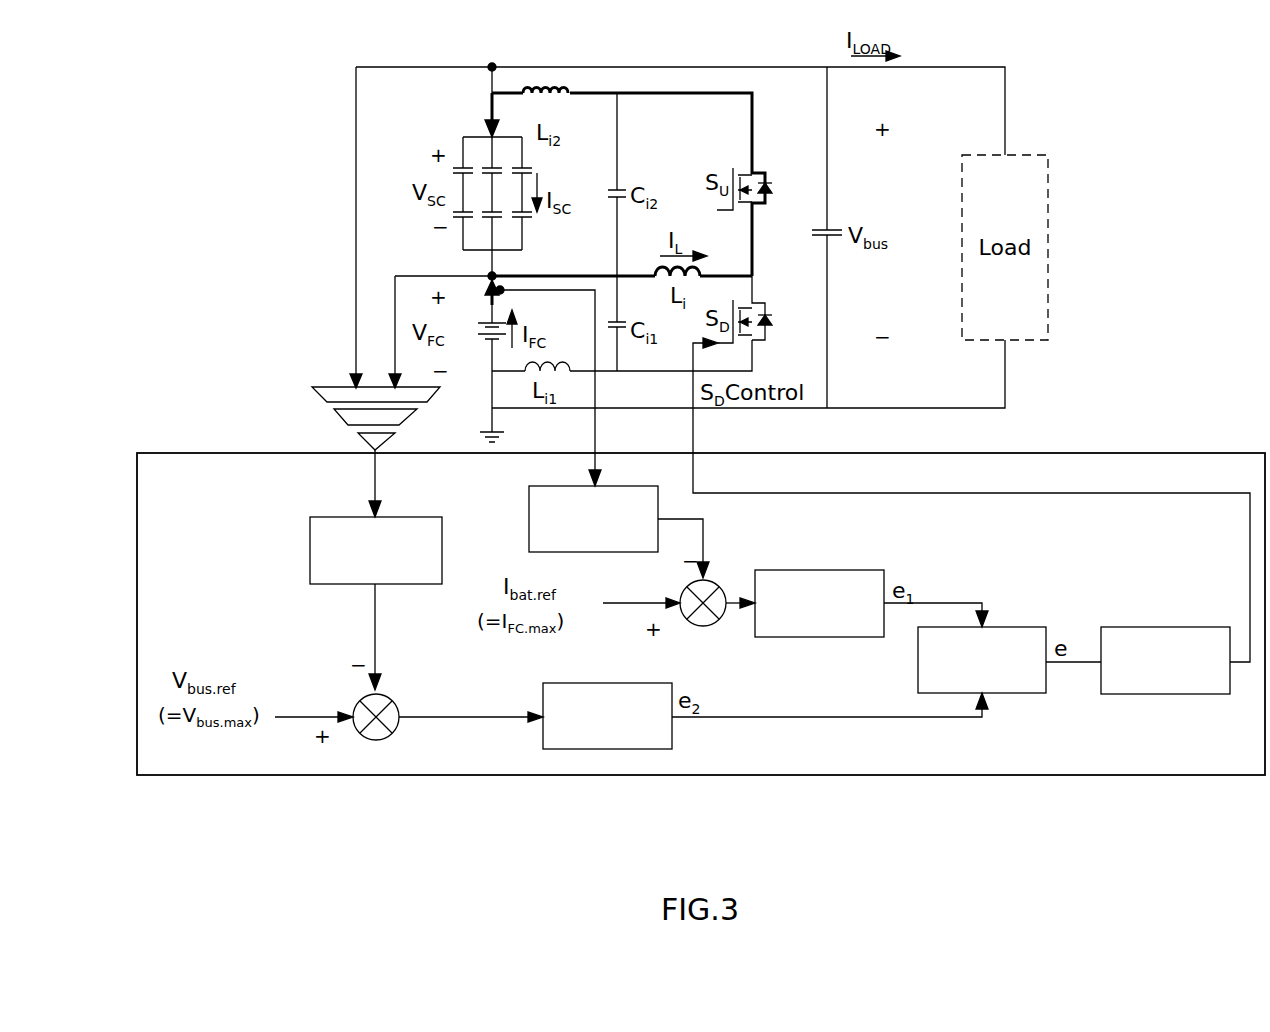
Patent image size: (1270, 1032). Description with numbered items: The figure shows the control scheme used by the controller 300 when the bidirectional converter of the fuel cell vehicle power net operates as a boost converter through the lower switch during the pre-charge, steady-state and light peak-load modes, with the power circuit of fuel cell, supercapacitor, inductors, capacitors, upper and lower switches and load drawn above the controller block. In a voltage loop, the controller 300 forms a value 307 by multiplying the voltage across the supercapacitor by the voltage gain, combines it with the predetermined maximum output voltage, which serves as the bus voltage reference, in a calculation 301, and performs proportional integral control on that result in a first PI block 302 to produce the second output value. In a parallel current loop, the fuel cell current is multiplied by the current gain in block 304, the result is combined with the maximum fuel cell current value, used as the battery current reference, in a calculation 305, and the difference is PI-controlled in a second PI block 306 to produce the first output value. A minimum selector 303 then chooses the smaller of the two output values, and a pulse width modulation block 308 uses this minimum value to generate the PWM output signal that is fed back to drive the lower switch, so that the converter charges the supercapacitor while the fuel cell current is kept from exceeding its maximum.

The controller 300 is at (201, 453).
The voltage calculation 301 is at (375, 740).
The proportional integral control for output value e2 302 is at (607, 749).
The minimum value selection 303 is at (1015, 627).
The fuel cell current gain K_I multiplication 304 is at (529, 508).
The current calculation 305 is at (704, 626).
The proportional integral control for output value e1 306 is at (820, 570).
The supercapacitor voltage gain K_v value 307 is at (310, 550).
The pulse width modulation output 308 is at (1165, 627).